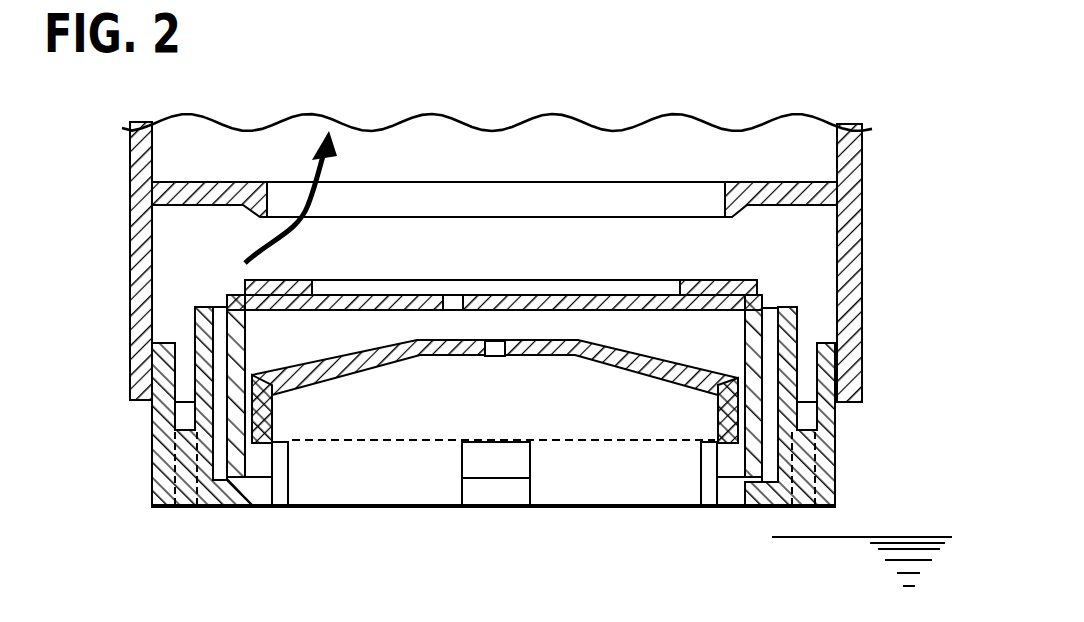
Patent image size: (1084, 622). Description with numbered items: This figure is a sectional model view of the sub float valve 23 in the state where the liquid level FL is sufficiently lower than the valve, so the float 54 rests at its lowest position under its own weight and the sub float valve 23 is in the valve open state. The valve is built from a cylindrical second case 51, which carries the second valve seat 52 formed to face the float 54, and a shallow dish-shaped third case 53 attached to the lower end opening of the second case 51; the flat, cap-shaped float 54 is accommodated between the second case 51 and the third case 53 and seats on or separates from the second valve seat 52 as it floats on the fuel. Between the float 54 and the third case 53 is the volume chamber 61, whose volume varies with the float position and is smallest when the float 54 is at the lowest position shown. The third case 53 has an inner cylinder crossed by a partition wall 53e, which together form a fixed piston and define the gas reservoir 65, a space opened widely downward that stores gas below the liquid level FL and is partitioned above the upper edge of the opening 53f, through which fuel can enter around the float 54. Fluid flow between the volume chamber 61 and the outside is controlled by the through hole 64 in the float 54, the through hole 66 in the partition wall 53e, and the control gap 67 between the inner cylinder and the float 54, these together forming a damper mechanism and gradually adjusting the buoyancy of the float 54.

The sub float valve 23 is at (125, 130).
The second case 51 is at (130, 168).
The second valve seat 52 is at (265, 218).
The float 54 is at (200, 278).
The control gap 67 is at (264, 353).
The third case 53 is at (152, 478).
The partition wall 53e is at (372, 365).
The opening 53f is at (725, 432).
The volume chamber 61 is at (321, 351).
The through hole 64 is at (453, 295).
The gas reservoir 65 is at (448, 434).
The through hole 66 is at (501, 341).
The liquid level FL is at (932, 537).